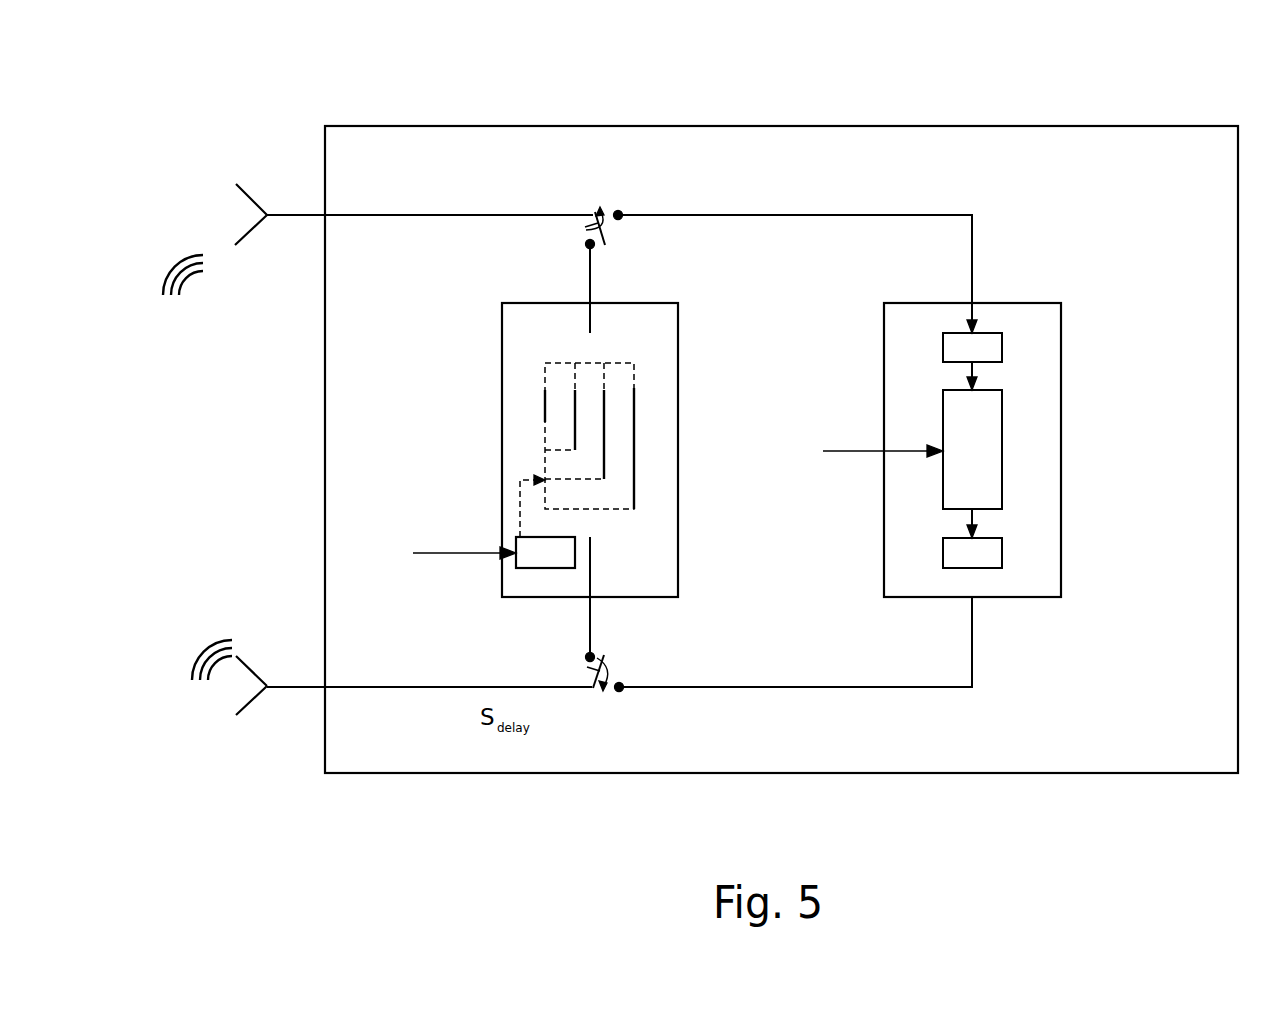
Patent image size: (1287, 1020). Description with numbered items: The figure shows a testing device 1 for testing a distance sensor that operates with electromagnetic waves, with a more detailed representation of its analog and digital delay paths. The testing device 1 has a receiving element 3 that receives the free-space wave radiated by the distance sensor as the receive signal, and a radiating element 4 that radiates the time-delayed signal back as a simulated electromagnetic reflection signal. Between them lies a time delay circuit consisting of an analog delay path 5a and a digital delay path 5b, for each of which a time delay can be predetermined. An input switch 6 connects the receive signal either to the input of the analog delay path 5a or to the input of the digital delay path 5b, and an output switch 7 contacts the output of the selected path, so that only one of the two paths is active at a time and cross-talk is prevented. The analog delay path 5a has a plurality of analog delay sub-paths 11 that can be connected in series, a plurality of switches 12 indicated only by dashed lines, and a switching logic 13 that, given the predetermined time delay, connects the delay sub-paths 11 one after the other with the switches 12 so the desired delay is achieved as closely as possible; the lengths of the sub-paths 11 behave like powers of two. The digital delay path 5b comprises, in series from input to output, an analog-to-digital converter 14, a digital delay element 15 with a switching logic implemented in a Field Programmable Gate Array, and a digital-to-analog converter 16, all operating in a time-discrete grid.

The testing device 1 is at (267, 117).
The receiving element 3 is at (253, 198).
The radiating element 4 is at (255, 670).
The analog delay path 5a is at (590, 450).
The digital delay path 5b is at (927, 450).
The input switch 6 is at (604, 222).
The output switch 7 is at (605, 691).
The analog delay sub-paths 11 is at (605, 405).
The switches 12 is at (573, 480).
The switching logic 13 is at (479, 521).
The analog-to-digital converter 14 is at (972, 332).
The digital delay element 15 is at (972, 435).
The digital-to-analog converter 16 is at (972, 538).